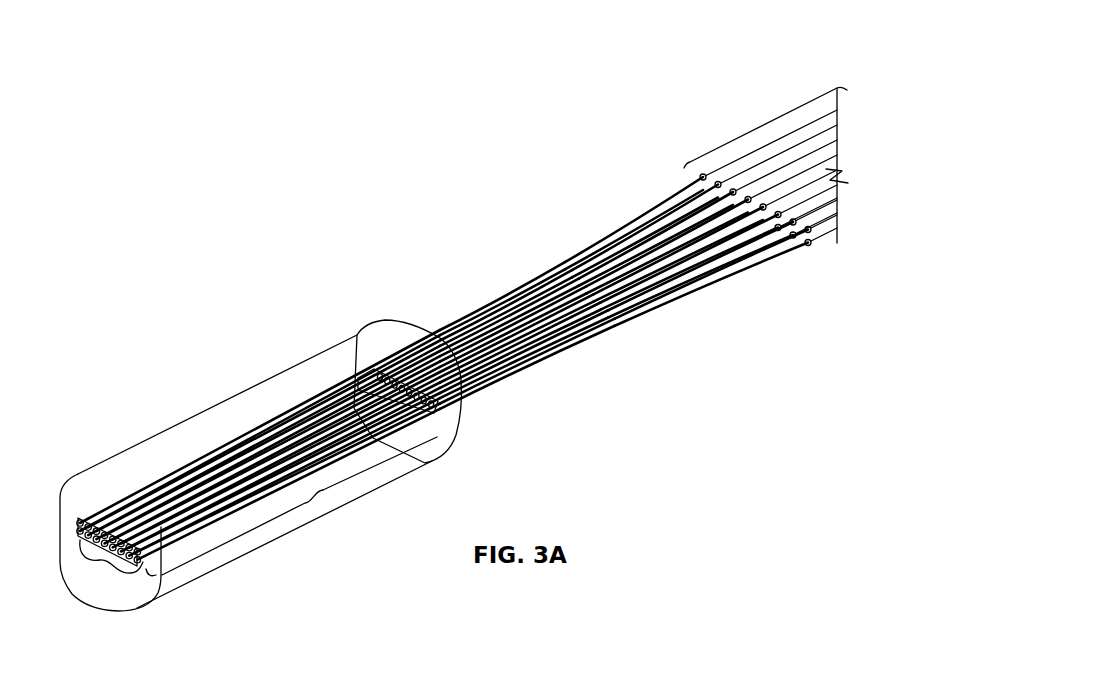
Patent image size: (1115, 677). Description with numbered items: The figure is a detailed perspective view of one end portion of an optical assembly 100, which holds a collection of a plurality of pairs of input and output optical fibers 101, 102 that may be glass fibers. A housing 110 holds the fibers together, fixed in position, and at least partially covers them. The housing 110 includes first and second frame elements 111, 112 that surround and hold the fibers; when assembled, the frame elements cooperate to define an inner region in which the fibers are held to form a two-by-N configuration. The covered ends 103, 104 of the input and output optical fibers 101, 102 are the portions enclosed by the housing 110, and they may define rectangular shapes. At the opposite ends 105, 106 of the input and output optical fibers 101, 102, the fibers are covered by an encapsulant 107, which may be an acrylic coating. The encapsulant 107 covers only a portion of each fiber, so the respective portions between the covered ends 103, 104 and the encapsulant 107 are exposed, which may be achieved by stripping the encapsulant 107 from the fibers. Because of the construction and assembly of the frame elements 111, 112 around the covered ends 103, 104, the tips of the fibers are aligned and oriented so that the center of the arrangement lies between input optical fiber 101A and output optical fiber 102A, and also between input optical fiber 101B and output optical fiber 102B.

The optical assembly 100 is at (165, 220).
The input optical fiber 101 is at (124, 504).
The input optical fiber 101A is at (617, 232).
The input optical fiber 101B is at (576, 270).
The output optical fiber 102 is at (93, 569).
The output optical fiber 102A is at (718, 287).
The output optical fiber 102B is at (668, 300).
The end of input optical fiber 103 is at (330, 513).
The end of output optical fiber 104 is at (380, 463).
The end of input optical fiber 105 is at (768, 122).
The end of output optical fiber 106 is at (806, 222).
The encapsulant 107 is at (830, 197).
The housing 110 is at (249, 372).
The first frame element 111 is at (162, 442).
The second frame element 112 is at (217, 560).